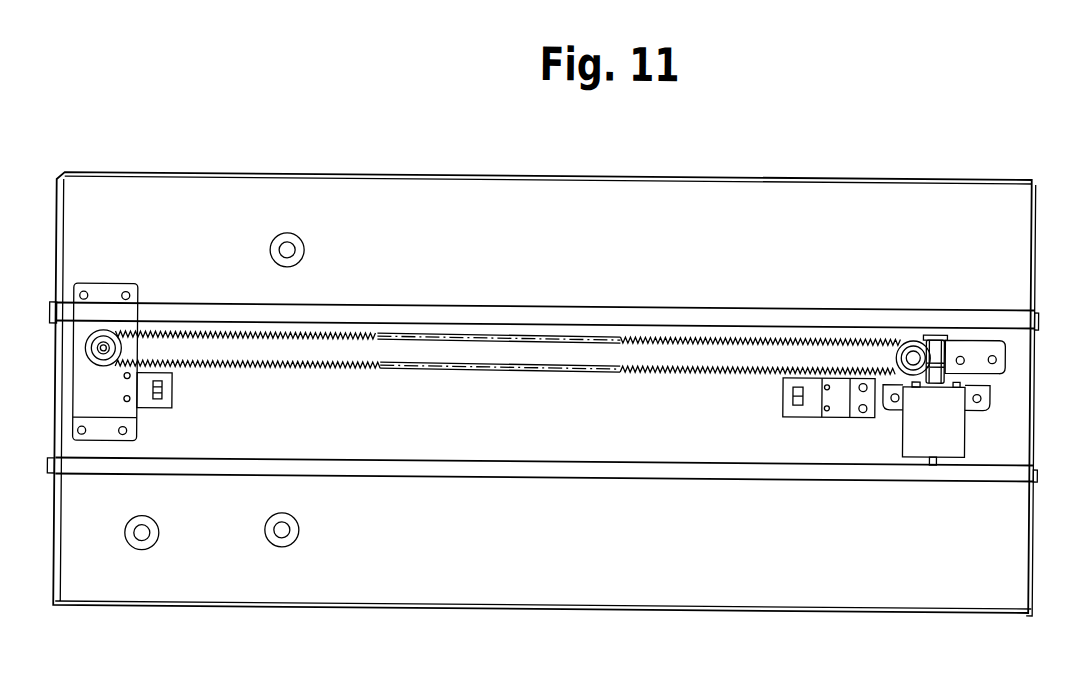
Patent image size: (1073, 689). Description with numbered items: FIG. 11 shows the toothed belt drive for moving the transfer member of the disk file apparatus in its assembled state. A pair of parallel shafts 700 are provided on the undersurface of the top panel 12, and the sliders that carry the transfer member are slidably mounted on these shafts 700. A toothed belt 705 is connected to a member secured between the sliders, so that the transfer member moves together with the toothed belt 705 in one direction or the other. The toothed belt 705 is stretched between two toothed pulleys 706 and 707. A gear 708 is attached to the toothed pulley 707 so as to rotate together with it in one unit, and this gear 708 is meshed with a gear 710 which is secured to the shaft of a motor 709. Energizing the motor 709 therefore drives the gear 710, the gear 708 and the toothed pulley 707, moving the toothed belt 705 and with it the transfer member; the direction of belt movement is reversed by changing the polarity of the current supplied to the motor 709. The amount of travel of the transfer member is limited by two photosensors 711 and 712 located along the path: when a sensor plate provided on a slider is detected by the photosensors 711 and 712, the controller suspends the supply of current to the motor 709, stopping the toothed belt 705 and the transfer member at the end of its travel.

The top panel 12 is at (605, 192).
The parallel shafts 700 is at (715, 313).
The toothed belt 705 is at (465, 373).
The toothed pulley 706 is at (102, 334).
The toothed pulley 707 is at (920, 342).
The gear 708 is at (906, 342).
The motor 709 is at (923, 439).
The gear 710 is at (944, 334).
The photosensor 711 is at (785, 405).
The photosensor 712 is at (165, 396).